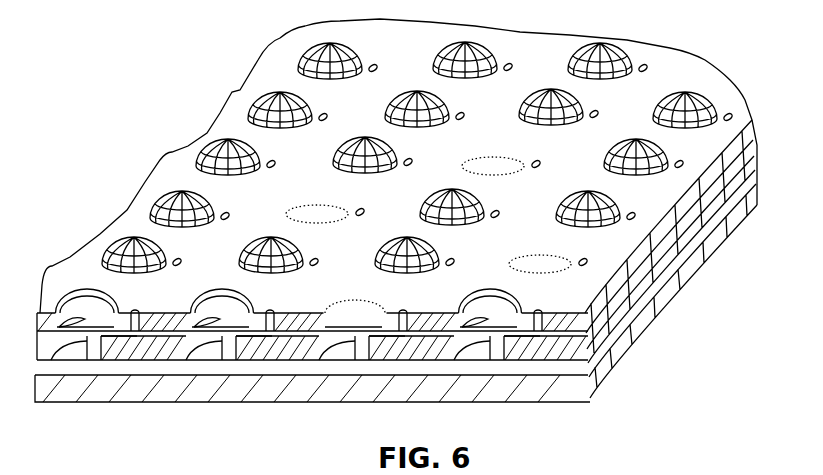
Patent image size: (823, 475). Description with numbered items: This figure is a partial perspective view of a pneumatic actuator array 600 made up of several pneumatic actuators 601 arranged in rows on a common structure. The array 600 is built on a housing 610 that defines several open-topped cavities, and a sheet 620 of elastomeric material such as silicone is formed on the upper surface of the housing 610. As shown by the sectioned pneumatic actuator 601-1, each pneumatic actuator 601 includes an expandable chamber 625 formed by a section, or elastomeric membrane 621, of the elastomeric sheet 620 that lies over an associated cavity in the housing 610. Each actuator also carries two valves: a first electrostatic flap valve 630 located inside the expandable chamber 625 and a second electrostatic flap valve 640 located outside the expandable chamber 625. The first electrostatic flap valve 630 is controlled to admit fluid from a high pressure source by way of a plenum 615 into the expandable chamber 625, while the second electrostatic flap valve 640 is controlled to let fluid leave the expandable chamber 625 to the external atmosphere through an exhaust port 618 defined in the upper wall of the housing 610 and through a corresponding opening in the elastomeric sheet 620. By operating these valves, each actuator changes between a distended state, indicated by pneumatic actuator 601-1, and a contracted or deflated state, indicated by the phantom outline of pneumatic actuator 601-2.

The pneumatic actuator array 600 is at (396, 221).
The pneumatic actuator 601 is at (409, 136).
The pneumatic actuator in distended state 601-1 is at (204, 282).
The pneumatic actuator in contracted state 601-2 is at (350, 283).
The housing 610 is at (668, 298).
The plenum 615 is at (590, 367).
The exhaust port 618 is at (370, 70).
The elastomeric sheet 620 is at (180, 175).
The elastomeric membrane section 621 is at (256, 96).
The expandable chamber 625 is at (217, 304).
The first electrostatic flap valve 630 is at (204, 345).
The second electrostatic flap valve 640 is at (246, 345).